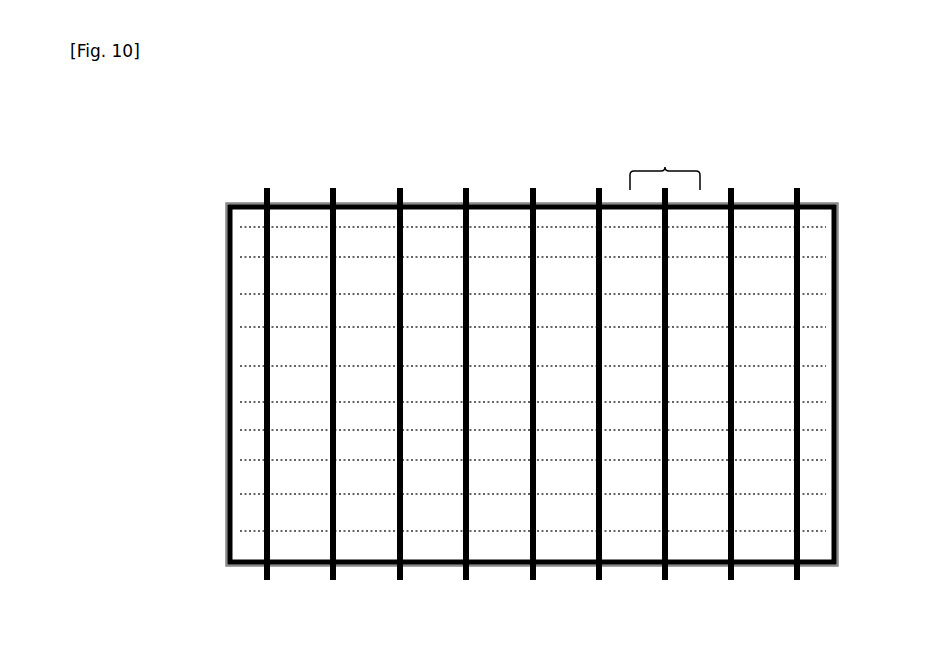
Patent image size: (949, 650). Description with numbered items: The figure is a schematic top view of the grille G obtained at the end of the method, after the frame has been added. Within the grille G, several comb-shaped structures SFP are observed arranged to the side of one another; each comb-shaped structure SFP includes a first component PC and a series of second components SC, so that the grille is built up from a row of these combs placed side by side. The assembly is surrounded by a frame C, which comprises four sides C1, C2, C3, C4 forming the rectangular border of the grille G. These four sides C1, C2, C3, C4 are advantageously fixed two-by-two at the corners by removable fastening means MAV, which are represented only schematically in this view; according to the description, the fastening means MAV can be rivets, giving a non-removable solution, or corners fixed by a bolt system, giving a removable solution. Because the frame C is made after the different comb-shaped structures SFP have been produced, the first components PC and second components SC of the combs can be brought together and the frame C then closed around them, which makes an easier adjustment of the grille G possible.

The grille G is at (520, 387).
The removable fastening means MAV is at (240, 196).
The frame C is at (496, 199).
The first side of the frame C1 is at (227, 372).
The second side of the frame C2 is at (366, 196).
The third side of the frame C3 is at (838, 438).
The fourth side of the frame C4 is at (376, 566).
The comb-shaped structure SFP is at (665, 362).
The second component SC is at (782, 222).
The first component PC is at (815, 344).